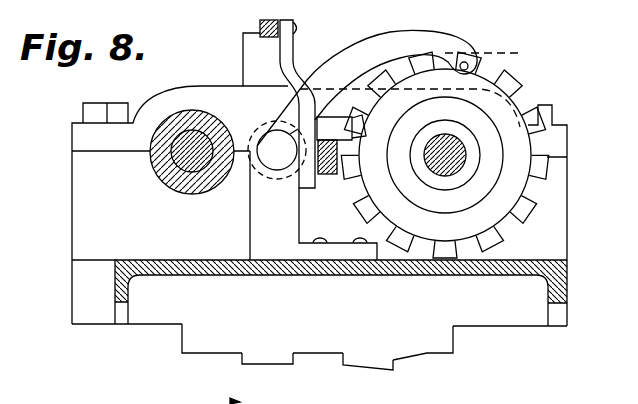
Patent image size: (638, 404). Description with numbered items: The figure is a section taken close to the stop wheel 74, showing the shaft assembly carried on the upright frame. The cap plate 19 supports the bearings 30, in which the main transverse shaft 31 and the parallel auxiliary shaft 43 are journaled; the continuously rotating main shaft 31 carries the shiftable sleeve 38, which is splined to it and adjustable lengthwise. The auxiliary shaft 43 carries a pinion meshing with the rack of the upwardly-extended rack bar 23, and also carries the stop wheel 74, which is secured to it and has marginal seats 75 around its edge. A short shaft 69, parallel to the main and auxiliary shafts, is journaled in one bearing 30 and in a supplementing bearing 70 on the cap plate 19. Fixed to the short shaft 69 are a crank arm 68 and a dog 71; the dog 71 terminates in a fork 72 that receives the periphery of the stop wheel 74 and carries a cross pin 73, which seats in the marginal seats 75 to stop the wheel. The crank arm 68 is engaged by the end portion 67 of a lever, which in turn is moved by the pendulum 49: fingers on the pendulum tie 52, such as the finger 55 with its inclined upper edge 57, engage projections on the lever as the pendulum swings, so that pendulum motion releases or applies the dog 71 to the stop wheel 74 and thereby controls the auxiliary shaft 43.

The cap plate 19 is at (501, 313).
The rack bar 23 is at (365, 368).
The bearings 30 is at (74, 198).
The main transverse shaft 31 is at (168, 170).
The sleeve 38 is at (188, 194).
The auxiliary shaft 43 is at (447, 166).
The pendulum 49 is at (210, 397).
The tie 52 is at (260, 26).
The finger 55 is at (280, 65).
The inclined upper edge 57 is at (298, 187).
The end portion of the lever 67 is at (331, 176).
The crank arm 68 is at (354, 118).
The short shaft 69 is at (262, 163).
The supplementing bearing 70 is at (259, 243).
The dog 71 is at (367, 88).
The fork 72 is at (473, 44).
The cross pin 73 is at (427, 87).
The stop wheel 74 is at (520, 180).
The marginal seats 75 is at (512, 218).